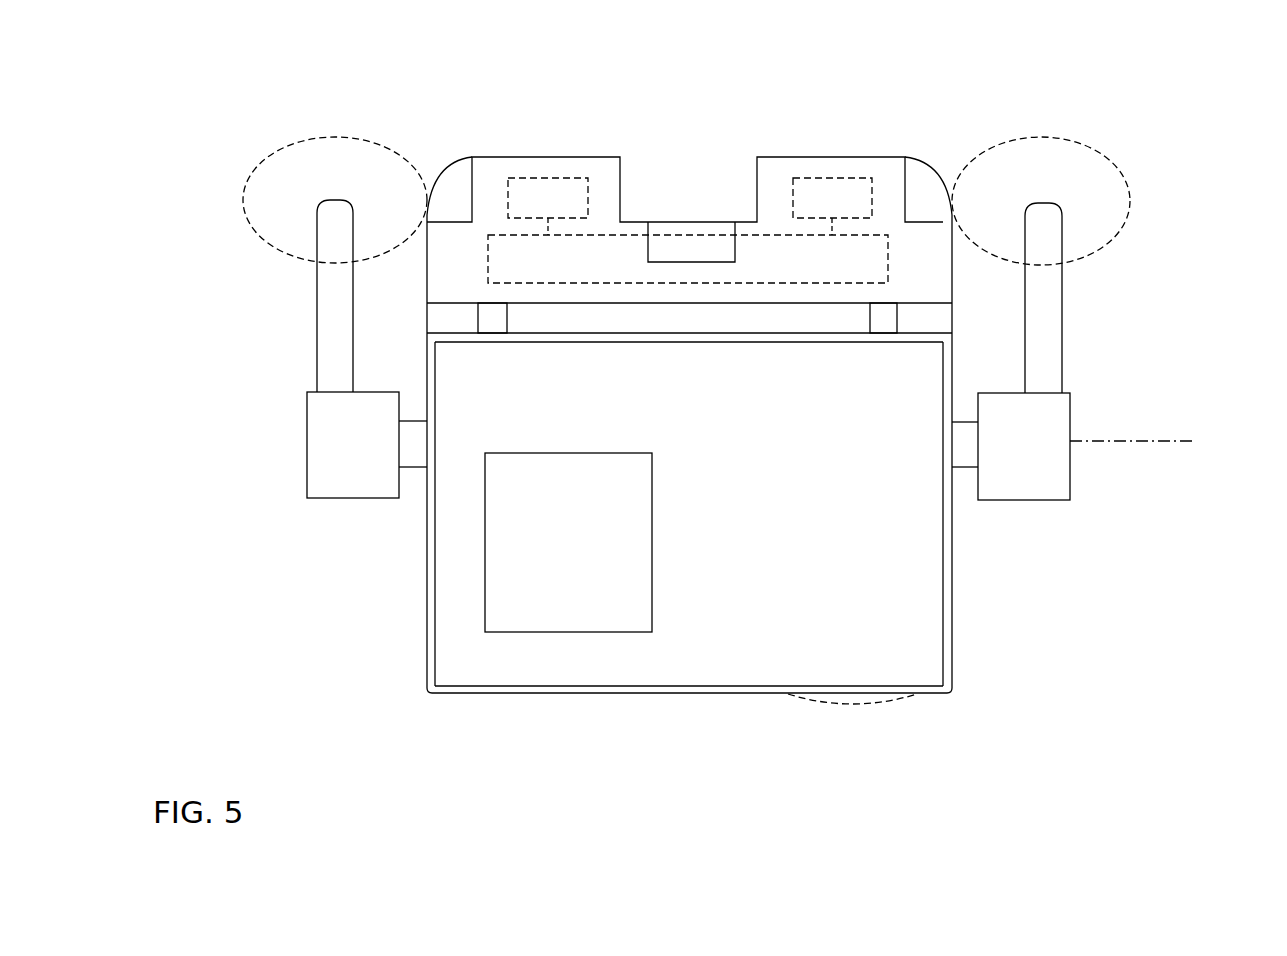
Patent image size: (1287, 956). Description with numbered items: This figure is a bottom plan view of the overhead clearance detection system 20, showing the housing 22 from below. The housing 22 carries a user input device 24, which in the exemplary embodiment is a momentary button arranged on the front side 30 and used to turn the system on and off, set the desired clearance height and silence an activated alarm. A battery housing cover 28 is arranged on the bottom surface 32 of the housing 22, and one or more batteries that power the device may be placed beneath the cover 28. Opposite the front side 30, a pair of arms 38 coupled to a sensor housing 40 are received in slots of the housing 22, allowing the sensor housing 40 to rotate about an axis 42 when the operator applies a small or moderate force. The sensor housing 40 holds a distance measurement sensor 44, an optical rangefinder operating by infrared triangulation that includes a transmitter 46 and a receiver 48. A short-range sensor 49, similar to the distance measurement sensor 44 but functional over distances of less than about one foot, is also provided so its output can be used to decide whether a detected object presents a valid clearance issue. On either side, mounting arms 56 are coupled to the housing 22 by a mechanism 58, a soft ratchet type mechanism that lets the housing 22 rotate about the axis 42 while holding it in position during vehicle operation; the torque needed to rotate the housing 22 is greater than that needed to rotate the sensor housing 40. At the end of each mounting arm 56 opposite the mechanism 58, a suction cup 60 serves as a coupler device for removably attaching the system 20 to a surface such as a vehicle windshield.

The overhead clearance detection system 20 is at (178, 140).
The housing 22 is at (950, 605).
The user input device 24 is at (860, 705).
The battery housing cover 28 is at (584, 558).
The front side 30 is at (645, 694).
The bottom surface 32 is at (812, 518).
The arms 38 is at (507, 322).
The sensor housing 40 is at (483, 157).
The axis 42 is at (1145, 441).
The distance measurement sensor 44 is at (710, 257).
The transmitter 46 is at (856, 178).
The receiver 48 is at (588, 178).
The short-range sensor 49 is at (678, 222).
The mounting arms 56 is at (317, 353).
The mechanism 58 is at (362, 500).
The suction cup 60 is at (352, 137).